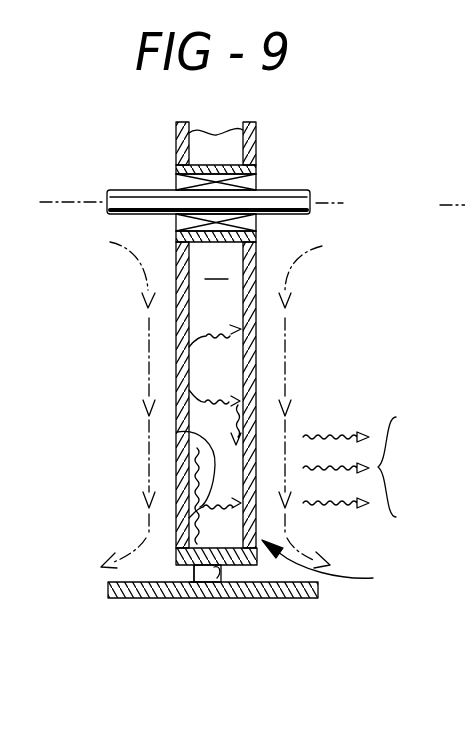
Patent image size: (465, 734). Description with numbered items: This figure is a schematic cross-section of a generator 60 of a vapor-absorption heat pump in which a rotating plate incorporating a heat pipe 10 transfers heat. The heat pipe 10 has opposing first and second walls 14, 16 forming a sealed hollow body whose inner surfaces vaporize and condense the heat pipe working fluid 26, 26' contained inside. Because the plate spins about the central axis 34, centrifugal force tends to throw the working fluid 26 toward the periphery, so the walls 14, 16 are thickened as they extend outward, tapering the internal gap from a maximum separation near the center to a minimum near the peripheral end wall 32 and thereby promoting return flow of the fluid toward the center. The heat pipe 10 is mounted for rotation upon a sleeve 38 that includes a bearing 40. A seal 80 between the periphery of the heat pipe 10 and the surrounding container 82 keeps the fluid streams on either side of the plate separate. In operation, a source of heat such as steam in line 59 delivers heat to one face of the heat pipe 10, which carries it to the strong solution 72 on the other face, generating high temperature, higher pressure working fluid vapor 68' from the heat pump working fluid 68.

The heat pipe 10 is at (248, 390).
The first wall 14 is at (197, 450).
The second wall 16 is at (257, 357).
The heat pipe working fluid 26 is at (144, 448).
The heat transfer arrows 26' is at (153, 429).
The peripheral end wall 32 is at (190, 592).
The central axis 34 is at (55, 202).
The sleeve 38 is at (256, 170).
The bearing 40 is at (176, 183).
The line 59 is at (140, 273).
The generator 60 is at (335, 565).
The heat pump working fluid 68 is at (448, 280).
The working fluid vapor 68' is at (372, 467).
The strong solution 72 is at (326, 277).
The seal 80 is at (222, 572).
The container 82 is at (300, 598).